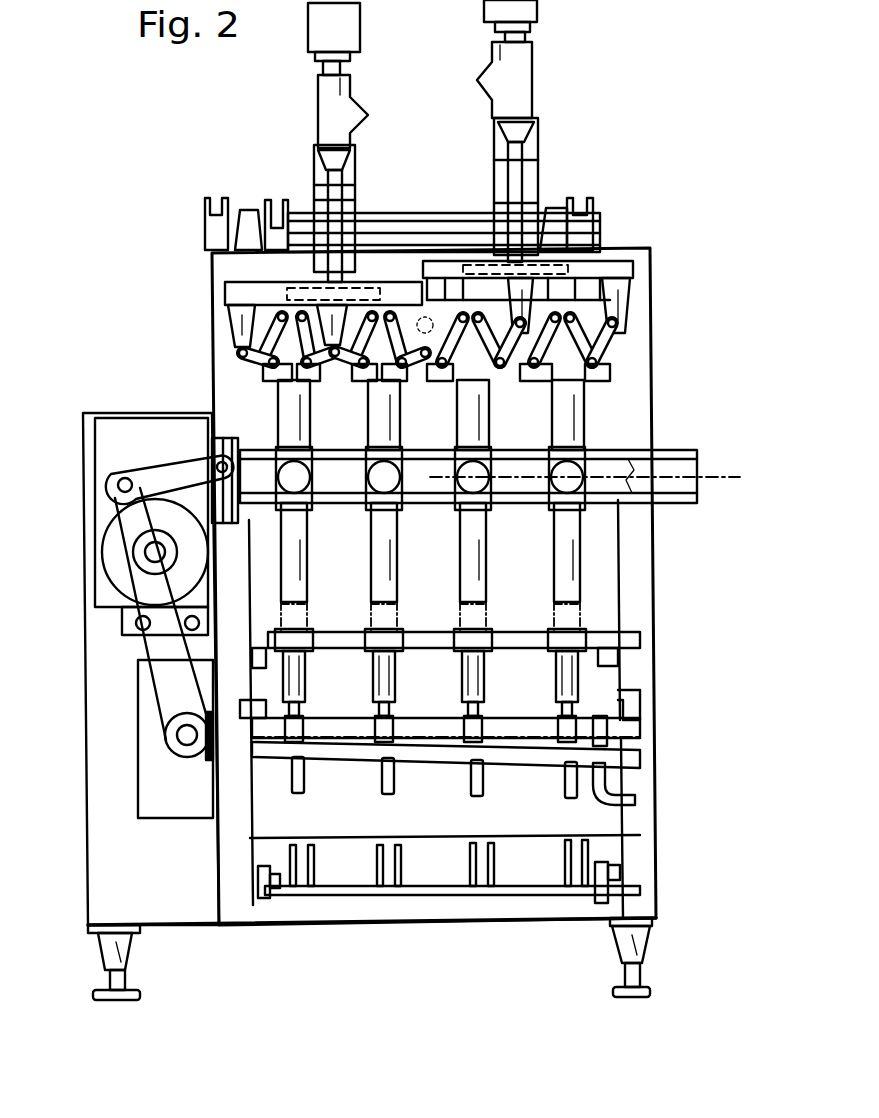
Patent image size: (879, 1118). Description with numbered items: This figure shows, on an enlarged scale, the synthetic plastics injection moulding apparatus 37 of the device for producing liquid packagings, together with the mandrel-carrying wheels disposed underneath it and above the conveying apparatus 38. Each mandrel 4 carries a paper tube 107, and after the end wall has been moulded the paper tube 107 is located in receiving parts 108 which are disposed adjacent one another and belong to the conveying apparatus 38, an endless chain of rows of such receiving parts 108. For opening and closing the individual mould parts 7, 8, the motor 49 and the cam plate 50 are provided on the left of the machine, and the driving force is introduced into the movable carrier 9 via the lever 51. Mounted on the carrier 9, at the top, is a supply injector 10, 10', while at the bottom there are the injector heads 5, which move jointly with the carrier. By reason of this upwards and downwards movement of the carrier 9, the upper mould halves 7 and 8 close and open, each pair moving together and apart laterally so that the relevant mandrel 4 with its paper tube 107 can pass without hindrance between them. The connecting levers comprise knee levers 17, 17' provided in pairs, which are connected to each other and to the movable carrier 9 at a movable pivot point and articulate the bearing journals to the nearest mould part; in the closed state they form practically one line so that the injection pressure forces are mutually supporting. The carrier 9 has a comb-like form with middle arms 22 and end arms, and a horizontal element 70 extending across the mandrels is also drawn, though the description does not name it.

The mandrel 4 is at (297, 408).
The injector head 5 is at (545, 240).
The upper mould half 7 is at (268, 372).
The upper mould half 8 is at (612, 370).
The movable carrier 9 is at (237, 292).
The supply injector 10 is at (301, 142).
The supply injector 10' is at (535, 131).
The knee lever 17 is at (278, 346).
The knee lever 17' is at (272, 328).
The middle arm 22 is at (337, 312).
The injection moulding apparatus 37 is at (552, 137).
The conveying apparatus 38 is at (600, 692).
The motor 49 is at (170, 735).
The cam plate 50 is at (105, 535).
The lever 51 is at (168, 465).
The cross bar 70 is at (720, 471).
The paper tube 107 is at (523, 634).
The receiving part 108 is at (567, 641).